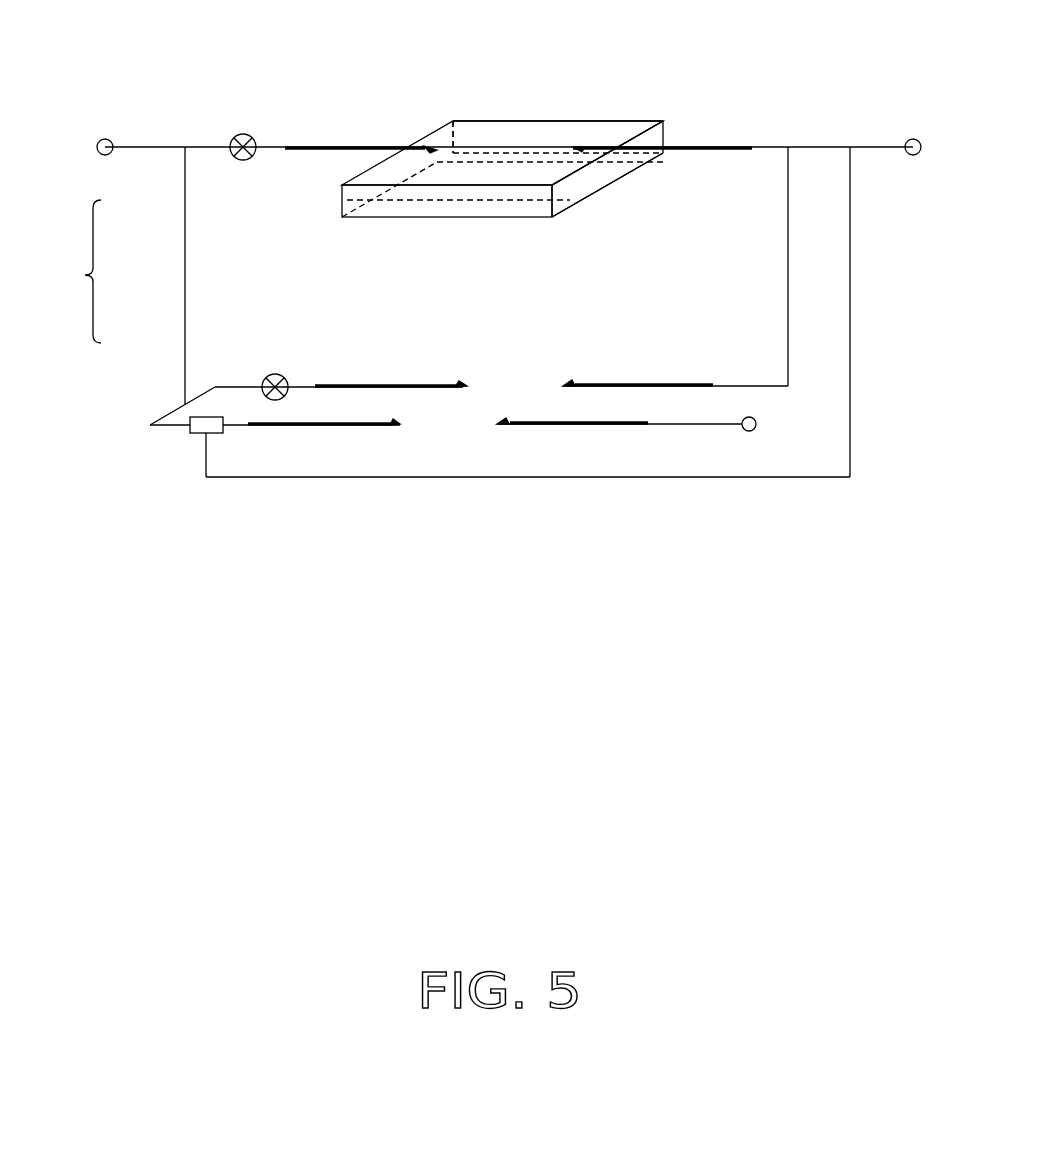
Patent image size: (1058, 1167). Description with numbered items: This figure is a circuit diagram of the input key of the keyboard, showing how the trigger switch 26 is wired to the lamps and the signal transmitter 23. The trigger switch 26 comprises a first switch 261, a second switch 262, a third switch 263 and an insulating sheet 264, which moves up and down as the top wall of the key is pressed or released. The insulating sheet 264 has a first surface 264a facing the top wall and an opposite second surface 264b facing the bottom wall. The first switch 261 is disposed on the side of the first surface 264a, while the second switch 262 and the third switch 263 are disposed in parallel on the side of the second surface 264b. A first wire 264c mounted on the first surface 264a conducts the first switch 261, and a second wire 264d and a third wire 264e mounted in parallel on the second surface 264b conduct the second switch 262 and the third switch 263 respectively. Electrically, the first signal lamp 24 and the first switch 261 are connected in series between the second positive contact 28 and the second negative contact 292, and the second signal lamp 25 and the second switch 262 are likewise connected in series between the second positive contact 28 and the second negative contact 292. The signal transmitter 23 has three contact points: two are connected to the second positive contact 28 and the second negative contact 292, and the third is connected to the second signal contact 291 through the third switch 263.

The signal transmitter 23 is at (195, 435).
The first signal lamp 24 is at (245, 134).
The second signal lamp 25 is at (263, 379).
The trigger switch 26 is at (71, 271).
The first switch 261 is at (380, 148).
The second switch 262 is at (463, 385).
The third switch 263 is at (397, 420).
The insulating sheet 264 is at (377, 222).
The first surface 264a is at (493, 130).
The second surface 264b is at (612, 191).
The first wire 264c is at (470, 152).
The second wire 264d is at (628, 165).
The third wire 264e is at (556, 205).
The second positive contact 28 is at (106, 139).
The second signal contact 291 is at (749, 431).
The second negative contact 292 is at (908, 141).